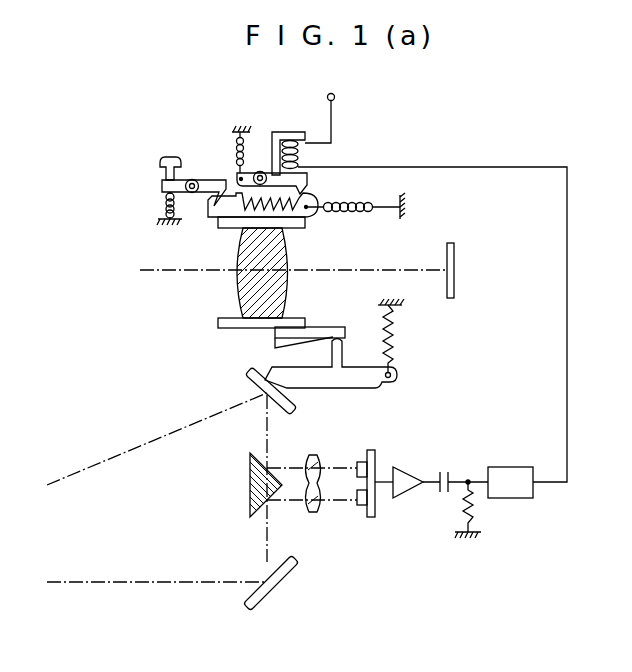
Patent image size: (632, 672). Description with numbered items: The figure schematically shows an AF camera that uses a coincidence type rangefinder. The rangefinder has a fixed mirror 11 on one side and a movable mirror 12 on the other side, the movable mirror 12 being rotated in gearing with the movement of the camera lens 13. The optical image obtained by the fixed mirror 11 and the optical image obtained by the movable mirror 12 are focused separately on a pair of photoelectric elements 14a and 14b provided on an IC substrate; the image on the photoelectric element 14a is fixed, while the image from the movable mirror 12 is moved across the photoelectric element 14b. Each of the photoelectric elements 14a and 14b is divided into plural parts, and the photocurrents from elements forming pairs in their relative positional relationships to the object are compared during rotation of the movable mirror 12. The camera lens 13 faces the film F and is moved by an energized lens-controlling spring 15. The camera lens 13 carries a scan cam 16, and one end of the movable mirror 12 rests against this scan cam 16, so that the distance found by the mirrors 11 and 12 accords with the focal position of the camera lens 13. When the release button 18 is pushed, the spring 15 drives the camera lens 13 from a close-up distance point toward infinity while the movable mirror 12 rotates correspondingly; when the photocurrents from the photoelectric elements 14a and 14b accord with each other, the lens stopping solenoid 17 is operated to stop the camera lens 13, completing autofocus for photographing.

The fixed mirror 11 is at (274, 586).
The movable mirror 12 is at (250, 384).
The camera lens 13 is at (237, 290).
The photoelectric element 14a is at (362, 506).
The photoelectric element 14b is at (362, 461).
The lens-controlling spring 15 is at (355, 222).
The scan cam 16 is at (315, 330).
The lens stopping solenoid 17 is at (306, 150).
The release button 18 is at (170, 157).
The film F is at (455, 253).